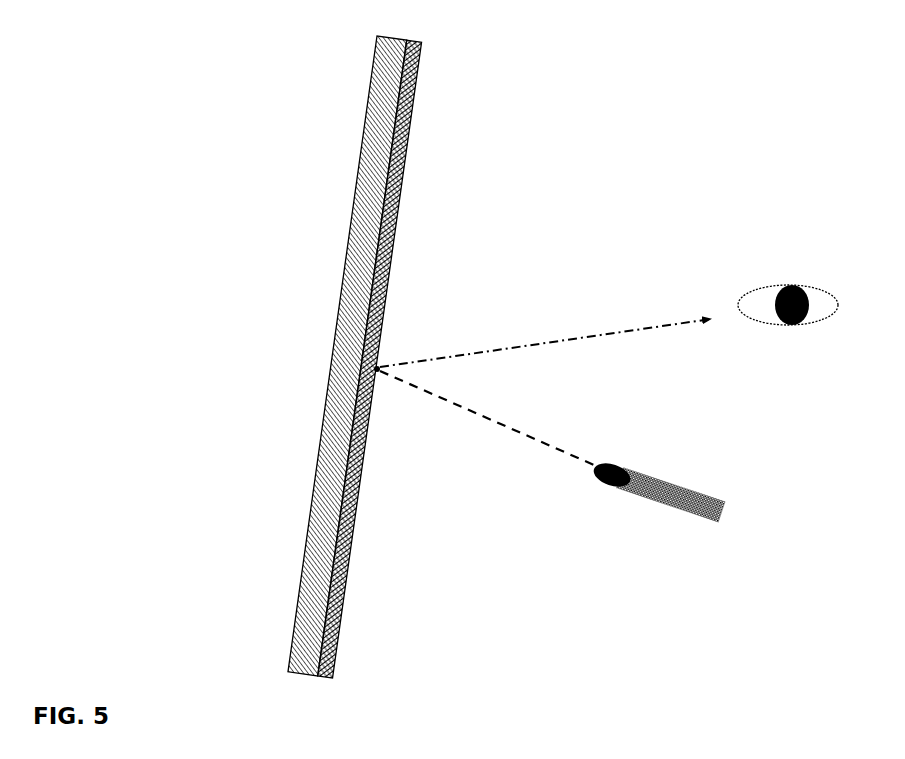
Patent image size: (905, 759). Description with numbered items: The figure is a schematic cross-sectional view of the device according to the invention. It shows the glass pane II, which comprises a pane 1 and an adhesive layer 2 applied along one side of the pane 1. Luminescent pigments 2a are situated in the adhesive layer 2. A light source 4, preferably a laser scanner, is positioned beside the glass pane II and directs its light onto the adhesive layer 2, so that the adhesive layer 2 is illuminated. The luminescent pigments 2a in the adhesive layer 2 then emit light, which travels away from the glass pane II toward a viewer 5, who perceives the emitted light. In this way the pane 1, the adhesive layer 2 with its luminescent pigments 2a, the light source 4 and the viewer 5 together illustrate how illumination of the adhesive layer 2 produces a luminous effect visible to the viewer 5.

The pane 1 is at (317, 498).
The adhesive layer 2 is at (402, 242).
The luminescent pigment or dye 2a is at (376, 370).
The light source 4 is at (659, 515).
The viewer 5 is at (800, 284).
The glass pane II is at (463, 107).